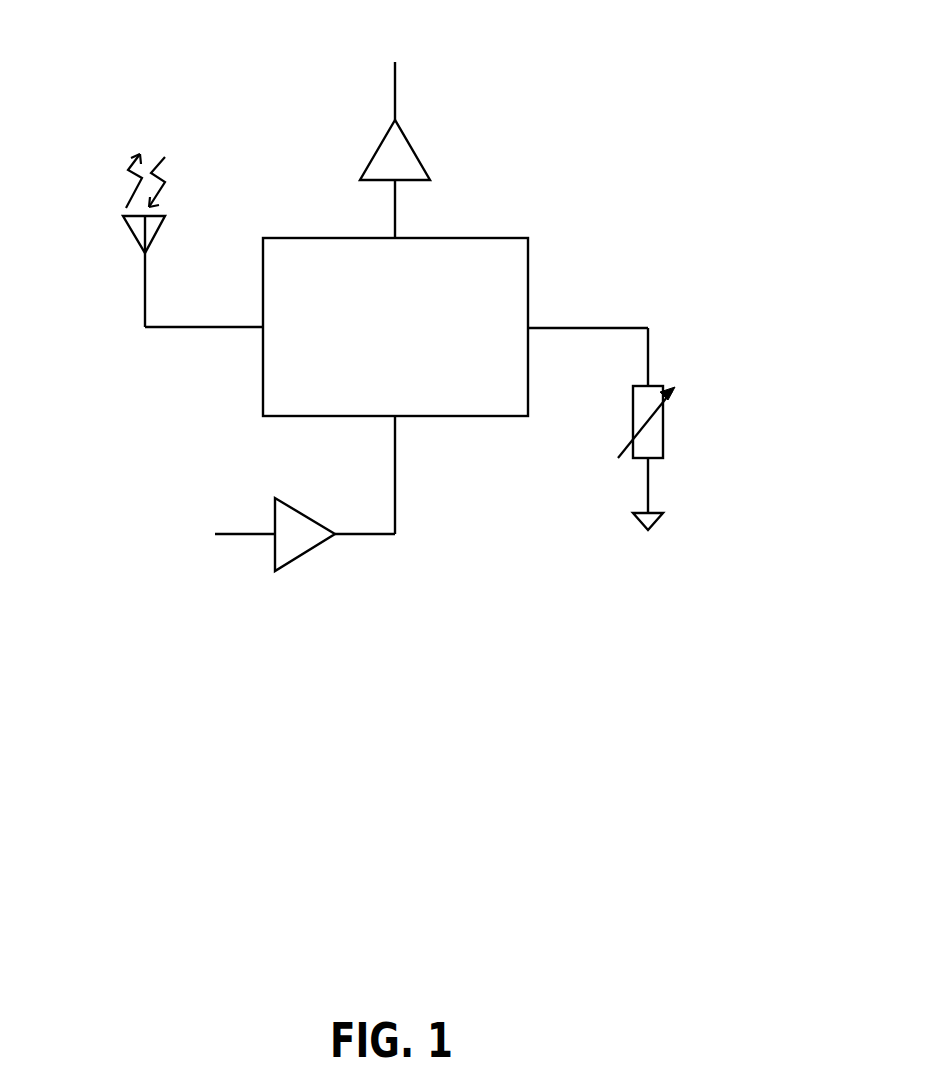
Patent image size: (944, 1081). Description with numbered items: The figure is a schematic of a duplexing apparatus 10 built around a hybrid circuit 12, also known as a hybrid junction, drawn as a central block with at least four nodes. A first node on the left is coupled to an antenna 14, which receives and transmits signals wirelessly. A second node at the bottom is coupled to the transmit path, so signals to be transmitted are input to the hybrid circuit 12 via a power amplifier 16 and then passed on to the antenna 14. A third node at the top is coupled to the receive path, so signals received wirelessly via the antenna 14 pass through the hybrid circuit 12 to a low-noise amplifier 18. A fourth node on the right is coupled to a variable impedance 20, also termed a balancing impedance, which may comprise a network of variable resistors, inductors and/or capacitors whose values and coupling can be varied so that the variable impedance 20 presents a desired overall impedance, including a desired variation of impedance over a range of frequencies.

The duplexing apparatus 10 is at (634, 53).
The hybrid circuit 12 is at (334, 418).
The antenna 14 is at (125, 243).
The power amplifier 16 is at (306, 560).
The low-noise amplifier 18 is at (368, 147).
The variable impedance 20 is at (632, 425).